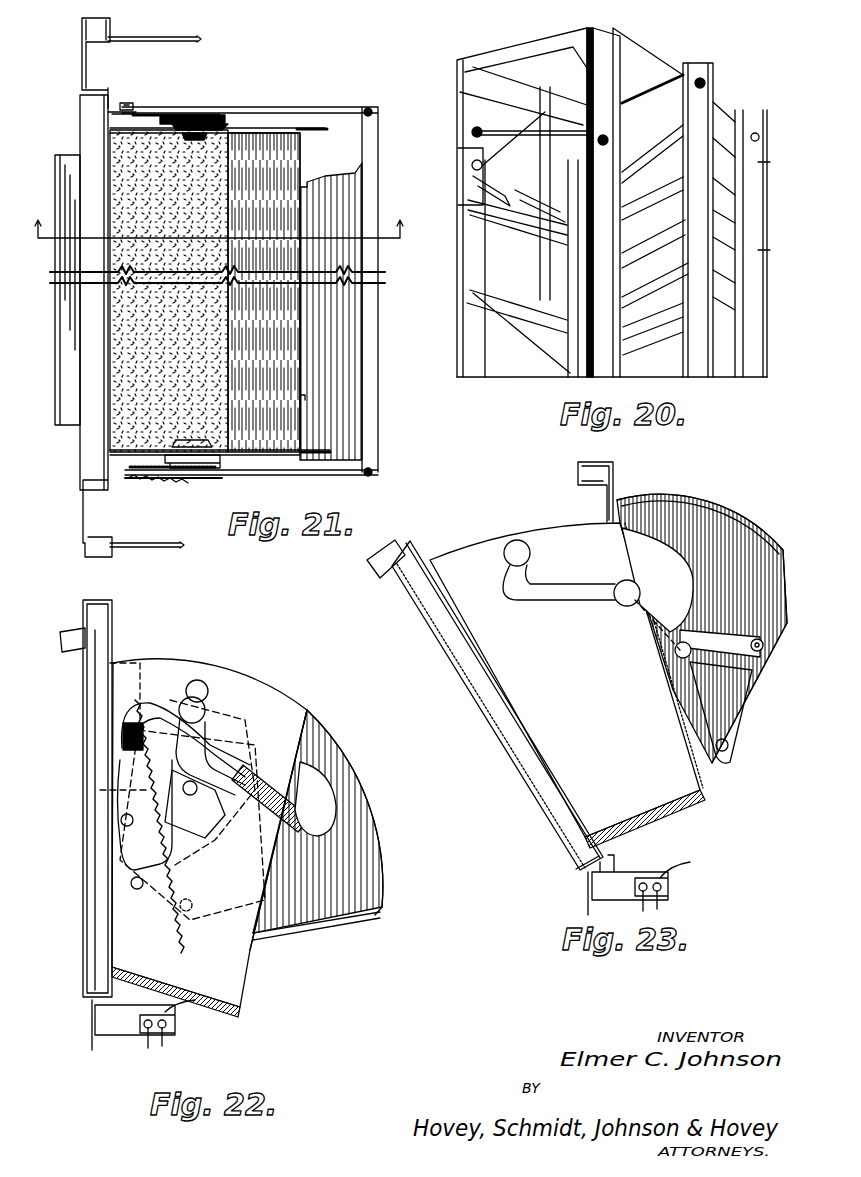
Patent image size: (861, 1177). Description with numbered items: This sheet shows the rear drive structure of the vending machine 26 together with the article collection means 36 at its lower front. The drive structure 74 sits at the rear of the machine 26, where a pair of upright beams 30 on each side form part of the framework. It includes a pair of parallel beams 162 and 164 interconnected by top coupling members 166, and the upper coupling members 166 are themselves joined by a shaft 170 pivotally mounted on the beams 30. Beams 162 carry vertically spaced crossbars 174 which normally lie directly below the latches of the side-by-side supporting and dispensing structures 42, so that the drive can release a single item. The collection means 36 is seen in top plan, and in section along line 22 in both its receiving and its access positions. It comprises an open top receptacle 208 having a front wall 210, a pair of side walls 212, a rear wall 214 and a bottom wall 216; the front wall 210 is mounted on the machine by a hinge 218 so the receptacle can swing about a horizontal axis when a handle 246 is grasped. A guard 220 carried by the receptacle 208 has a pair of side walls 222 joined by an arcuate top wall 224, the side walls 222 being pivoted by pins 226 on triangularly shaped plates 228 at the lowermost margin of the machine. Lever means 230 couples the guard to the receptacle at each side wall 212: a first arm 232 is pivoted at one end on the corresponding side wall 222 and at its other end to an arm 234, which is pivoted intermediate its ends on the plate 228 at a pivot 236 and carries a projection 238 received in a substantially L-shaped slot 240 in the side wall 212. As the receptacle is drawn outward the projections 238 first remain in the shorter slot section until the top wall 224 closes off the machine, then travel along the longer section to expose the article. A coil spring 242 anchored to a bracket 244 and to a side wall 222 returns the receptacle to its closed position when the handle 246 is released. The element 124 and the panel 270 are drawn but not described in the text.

In FIG. 21, the section line 22— 22 is at (218, 219).
In FIG. 20, the vending machine 26 is at (662, 66).
In FIG. 20, the upright beams 30 is at (612, 45).
In FIG. 23, the collection means 36 is at (548, 832).
In FIG. 20, the side-by-side structures 42 is at (640, 243).
In FIG. 20, the drive structure 74 is at (454, 183).
In FIG. 20, the mounting plate 124 is at (462, 202).
In FIG. 20, the beams 162 is at (585, 200).
In FIG. 20, the beams 164 is at (548, 178).
In FIG. 20, the top coupling members 166 is at (500, 118).
In FIG. 20, the shaft 170 is at (530, 125).
In FIG. 20, the crossbars 174 is at (505, 330).
In FIG. 21, the receptacle 208 is at (103, 440).
In FIG. 23, the receptacle 208 is at (492, 731).
In FIG. 23, the front wall 210 is at (455, 660).
In FIG. 21, the side walls 212 is at (290, 140).
In FIG. 23, the side walls 212 is at (566, 680).
In FIG. 22, the side walls 212 is at (203, 833).
In FIG. 21, the rear wall 214 is at (302, 425).
In FIG. 23, the rear wall 214 is at (640, 565).
In FIG. 23, the bottom wall 216 is at (640, 820).
In FIG. 22, the bottom wall 216 is at (176, 992).
In FIG. 23, the hinge 218 is at (592, 888).
In FIG. 22, the hinge 218 is at (143, 1025).
In FIG. 23, the guard 220 is at (676, 499).
In FIG. 21, the side walls 222 is at (308, 107).
In FIG. 23, the side walls 222 is at (702, 628).
In FIG. 22, the side walls 222 is at (318, 908).
In FIG. 21, the arcuate top wall 224 is at (300, 340).
In FIG. 23, the arcuate top wall 224 is at (737, 528).
In FIG. 22, the arcuate top wall 224 is at (380, 830).
In FIG. 21, the pins 226 is at (138, 104).
In FIG. 22, the pins 226 is at (130, 878).
In FIG. 21, the triangularly shaped plates 228 is at (112, 96).
In FIG. 23, the triangularly shaped plates 228 is at (711, 697).
In FIG. 21, the lever means 230 is at (200, 108).
In FIG. 23, the lever means 230 is at (702, 635).
In FIG. 23, the first arm 232 is at (735, 705).
In FIG. 23, the arm 234 is at (700, 658).
In FIG. 22, the arm 234 is at (255, 785).
In FIG. 23, the pivot 236 is at (680, 658).
In FIG. 22, the pivot 236 is at (222, 770).
In FIG. 22, the projection 238 is at (205, 712).
In FIG. 22, the L-shaped slot 240 is at (202, 692).
In FIG. 21, the coil spring 242 is at (180, 482).
In FIG. 22, the coil spring 242 is at (95, 800).
In FIG. 21, the bracket 244 is at (112, 515).
In FIG. 21, the handle 246 is at (60, 390).
In FIG. 23, the handle 246 is at (385, 578).
In FIG. 21, the end panel 270 is at (372, 387).